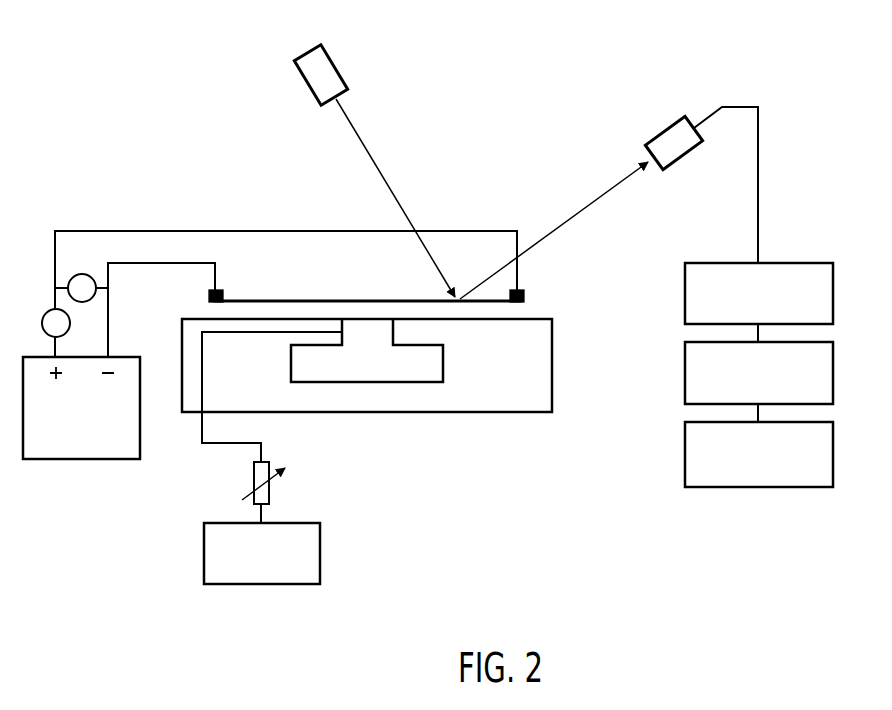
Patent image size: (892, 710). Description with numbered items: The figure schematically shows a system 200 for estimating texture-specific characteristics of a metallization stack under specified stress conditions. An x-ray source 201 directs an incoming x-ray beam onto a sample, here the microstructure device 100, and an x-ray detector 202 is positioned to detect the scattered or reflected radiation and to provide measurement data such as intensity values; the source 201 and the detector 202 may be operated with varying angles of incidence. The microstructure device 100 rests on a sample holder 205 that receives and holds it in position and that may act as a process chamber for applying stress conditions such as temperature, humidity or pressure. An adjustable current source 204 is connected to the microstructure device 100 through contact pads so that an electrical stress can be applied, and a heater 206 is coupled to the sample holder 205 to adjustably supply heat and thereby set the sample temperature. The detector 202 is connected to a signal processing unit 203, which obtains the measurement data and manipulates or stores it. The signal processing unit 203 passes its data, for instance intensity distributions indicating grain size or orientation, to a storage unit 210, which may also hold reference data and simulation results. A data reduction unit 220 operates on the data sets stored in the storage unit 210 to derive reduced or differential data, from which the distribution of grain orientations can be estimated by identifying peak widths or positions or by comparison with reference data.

The system 200 is at (112, 82).
The x-ray source 201 is at (335, 60).
The x-ray detector 202 is at (653, 133).
The microstructure device 100 is at (524, 305).
The sample holder 205 is at (527, 412).
The adjustable current source 204 is at (100, 430).
The heater 206 is at (258, 584).
The signal processing unit 203 is at (742, 310).
The data reduction unit 220 is at (685, 357).
The storage unit 210 is at (685, 438).